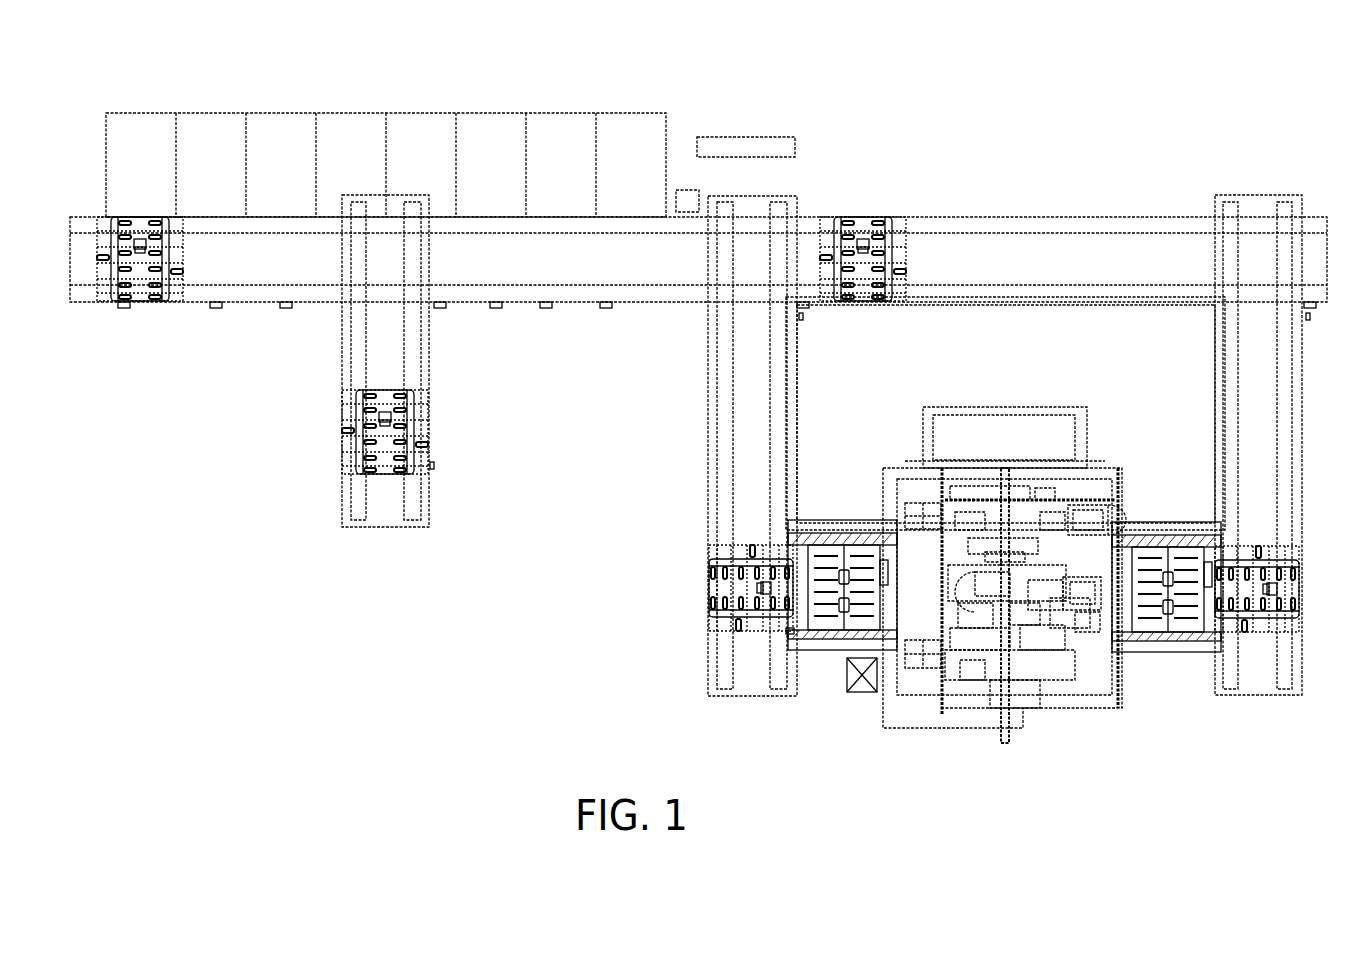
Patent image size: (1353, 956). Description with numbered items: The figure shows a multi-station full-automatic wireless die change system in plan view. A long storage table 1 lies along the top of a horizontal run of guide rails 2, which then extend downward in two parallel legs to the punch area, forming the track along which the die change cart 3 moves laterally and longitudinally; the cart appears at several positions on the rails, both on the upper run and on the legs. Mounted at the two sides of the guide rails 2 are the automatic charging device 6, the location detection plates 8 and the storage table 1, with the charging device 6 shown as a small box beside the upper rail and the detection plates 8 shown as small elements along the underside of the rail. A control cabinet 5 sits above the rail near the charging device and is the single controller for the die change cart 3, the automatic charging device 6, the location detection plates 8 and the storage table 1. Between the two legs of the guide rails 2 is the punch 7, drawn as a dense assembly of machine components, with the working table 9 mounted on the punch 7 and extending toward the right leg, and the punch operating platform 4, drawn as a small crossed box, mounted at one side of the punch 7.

The storage table 1 is at (638, 124).
The guide rails 2 is at (1214, 215).
The die change cart 3 is at (137, 245).
The punch operating platform 4 is at (860, 695).
The control cabinet 5 is at (782, 138).
The automatic charging device 6 is at (690, 197).
The punch 7 is at (1018, 572).
The location detection plates 8 is at (212, 308).
The working table 9 is at (1182, 565).